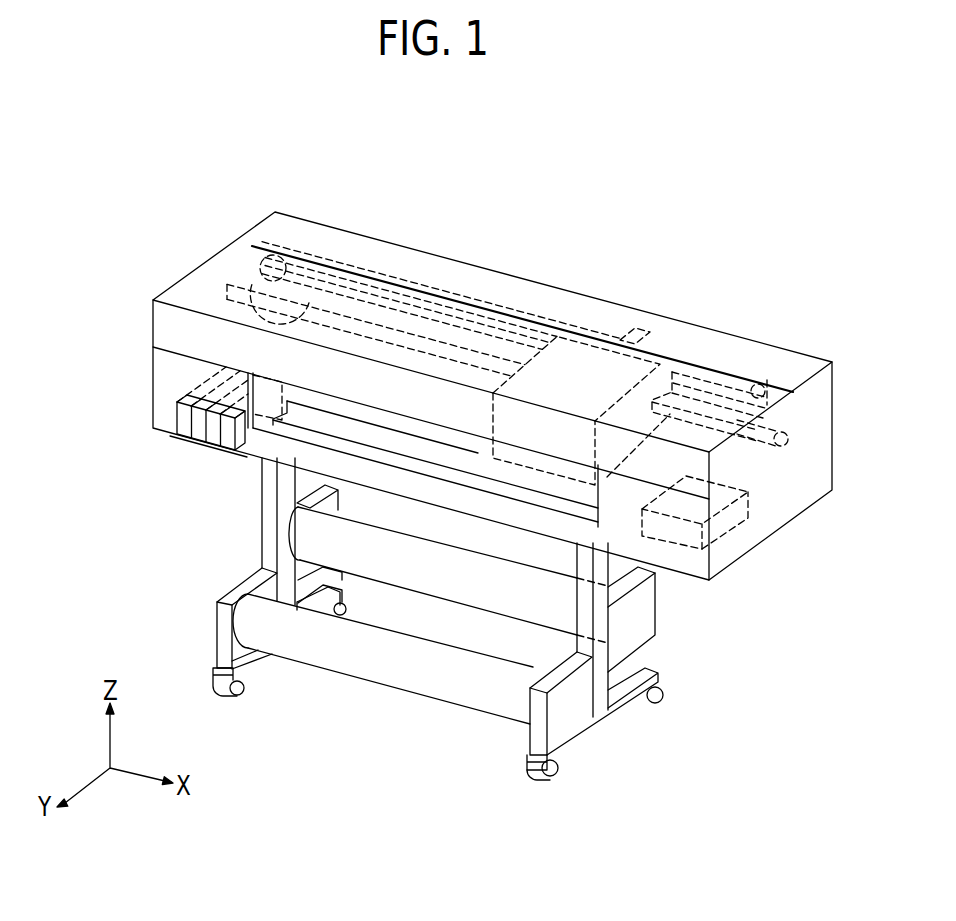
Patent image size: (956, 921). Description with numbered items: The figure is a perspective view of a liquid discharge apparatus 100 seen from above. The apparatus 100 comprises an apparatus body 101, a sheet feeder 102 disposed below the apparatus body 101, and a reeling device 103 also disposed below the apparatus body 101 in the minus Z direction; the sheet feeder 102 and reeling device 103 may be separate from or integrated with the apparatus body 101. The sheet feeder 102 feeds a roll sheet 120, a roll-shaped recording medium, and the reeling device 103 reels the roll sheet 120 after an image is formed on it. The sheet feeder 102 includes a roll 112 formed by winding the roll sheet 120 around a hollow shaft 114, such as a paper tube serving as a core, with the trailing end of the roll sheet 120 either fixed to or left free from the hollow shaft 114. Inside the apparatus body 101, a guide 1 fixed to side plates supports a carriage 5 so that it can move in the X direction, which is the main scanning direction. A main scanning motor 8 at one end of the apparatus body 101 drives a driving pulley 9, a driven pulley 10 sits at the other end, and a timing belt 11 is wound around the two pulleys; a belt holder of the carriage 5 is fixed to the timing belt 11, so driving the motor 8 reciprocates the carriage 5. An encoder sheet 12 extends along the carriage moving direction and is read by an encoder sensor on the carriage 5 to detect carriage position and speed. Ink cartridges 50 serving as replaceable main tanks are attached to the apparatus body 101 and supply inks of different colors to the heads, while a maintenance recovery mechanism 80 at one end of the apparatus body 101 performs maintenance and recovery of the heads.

The liquid discharge apparatus 100 is at (118, 156).
The apparatus body 101 is at (572, 268).
The guide 1 is at (340, 312).
The encoder sheet 12 is at (309, 264).
The driving pulley 9 is at (258, 247).
The main scanning motor 8 is at (256, 272).
The roll sheet 120 is at (343, 410).
The ink cartridges 50 is at (183, 418).
The carriage 5 is at (591, 388).
The timing belt 11 is at (737, 350).
The driven pulley 10 is at (793, 408).
The maintenance recovery mechanism 80 is at (745, 522).
The sheet feeder 102 is at (637, 625).
The reeling device 103 is at (563, 726).
The roll 112 is at (340, 541).
The hollow shaft 114 is at (397, 657).